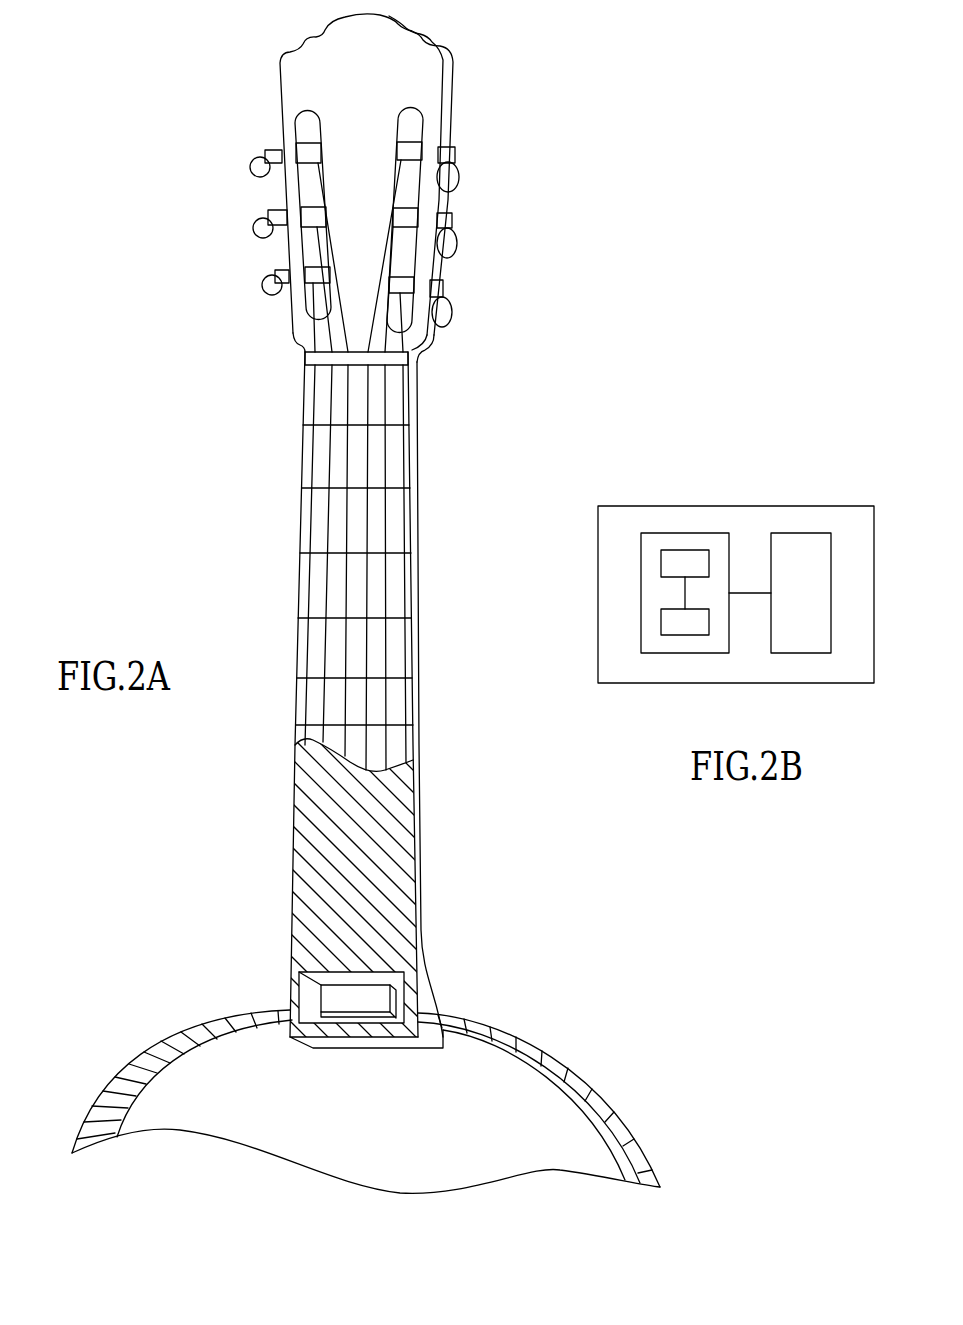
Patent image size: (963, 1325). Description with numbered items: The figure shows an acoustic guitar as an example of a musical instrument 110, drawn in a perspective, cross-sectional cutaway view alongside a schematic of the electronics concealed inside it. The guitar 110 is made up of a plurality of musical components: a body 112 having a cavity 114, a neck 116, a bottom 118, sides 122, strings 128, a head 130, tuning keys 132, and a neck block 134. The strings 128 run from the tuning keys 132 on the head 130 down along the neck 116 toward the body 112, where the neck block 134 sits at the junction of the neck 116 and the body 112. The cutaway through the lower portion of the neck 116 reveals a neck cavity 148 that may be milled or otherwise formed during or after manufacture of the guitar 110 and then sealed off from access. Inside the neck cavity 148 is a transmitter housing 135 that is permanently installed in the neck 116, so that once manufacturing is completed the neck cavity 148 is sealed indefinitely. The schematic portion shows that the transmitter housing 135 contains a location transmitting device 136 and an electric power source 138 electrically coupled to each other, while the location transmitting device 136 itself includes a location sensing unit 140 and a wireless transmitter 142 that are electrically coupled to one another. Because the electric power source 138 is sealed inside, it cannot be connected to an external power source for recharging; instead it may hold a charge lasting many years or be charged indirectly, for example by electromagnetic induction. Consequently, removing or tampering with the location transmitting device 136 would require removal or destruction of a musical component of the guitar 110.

In FIG. 2A, the musical instrument 110 is at (160, 530).
In FIG. 2A, the body 112 is at (354, 967).
In FIG. 2A, the cavity 114 is at (247, 1082).
In FIG. 2A, the neck 116 is at (395, 798).
In FIG. 2A, the bottom 118 is at (187, 1090).
In FIG. 2A, the sides 122 is at (488, 1020).
In FIG. 2A, the strings 128 is at (398, 578).
In FIG. 2A, the head 130 is at (310, 85).
In FIG. 2A, the tuning keys 132 is at (243, 259).
In FIG. 2A, the neck block 134 is at (390, 1046).
In FIG. 2A, the transmitter housing 135 is at (338, 995).
In FIG. 2B, the transmitter housing 135 is at (792, 506).
In FIG. 2B, the location transmitting device 136 is at (685, 533).
In FIG. 2B, the electric power source 138 is at (800, 653).
In FIG. 2B, the location sensing unit 140 is at (672, 550).
In FIG. 2B, the wireless transmitter 142 is at (685, 635).
In FIG. 2A, the neck cavity 148 is at (303, 1013).